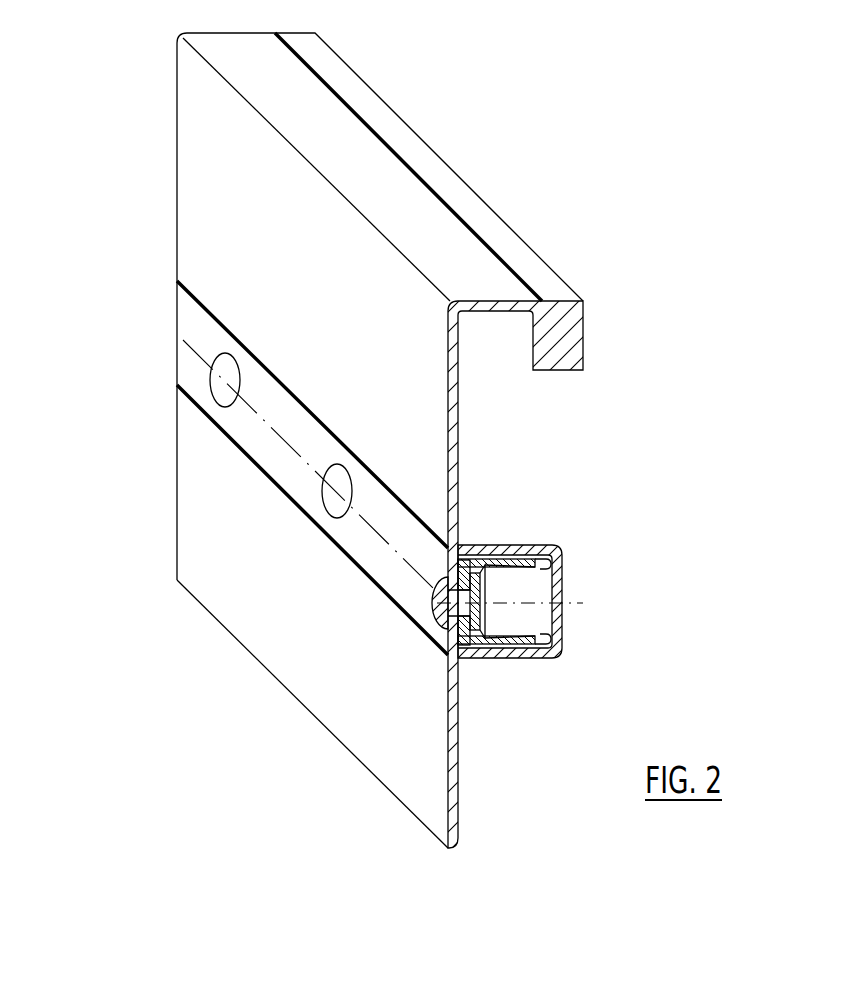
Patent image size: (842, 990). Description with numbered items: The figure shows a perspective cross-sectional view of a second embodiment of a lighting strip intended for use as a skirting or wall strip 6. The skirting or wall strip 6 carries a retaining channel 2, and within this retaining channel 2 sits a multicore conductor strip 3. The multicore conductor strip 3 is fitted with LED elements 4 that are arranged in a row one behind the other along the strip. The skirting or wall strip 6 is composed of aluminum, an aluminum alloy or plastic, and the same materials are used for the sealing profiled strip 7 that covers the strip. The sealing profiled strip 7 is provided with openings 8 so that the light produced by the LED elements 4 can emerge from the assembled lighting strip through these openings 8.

The retaining channel 2 is at (520, 591).
The multicore conductor strip 3 is at (486, 611).
The LED elements 4 is at (478, 545).
The skirting or wall strip 6 is at (132, 552).
The sealing profiled strip 7 is at (192, 322).
The openings 8 is at (327, 500).